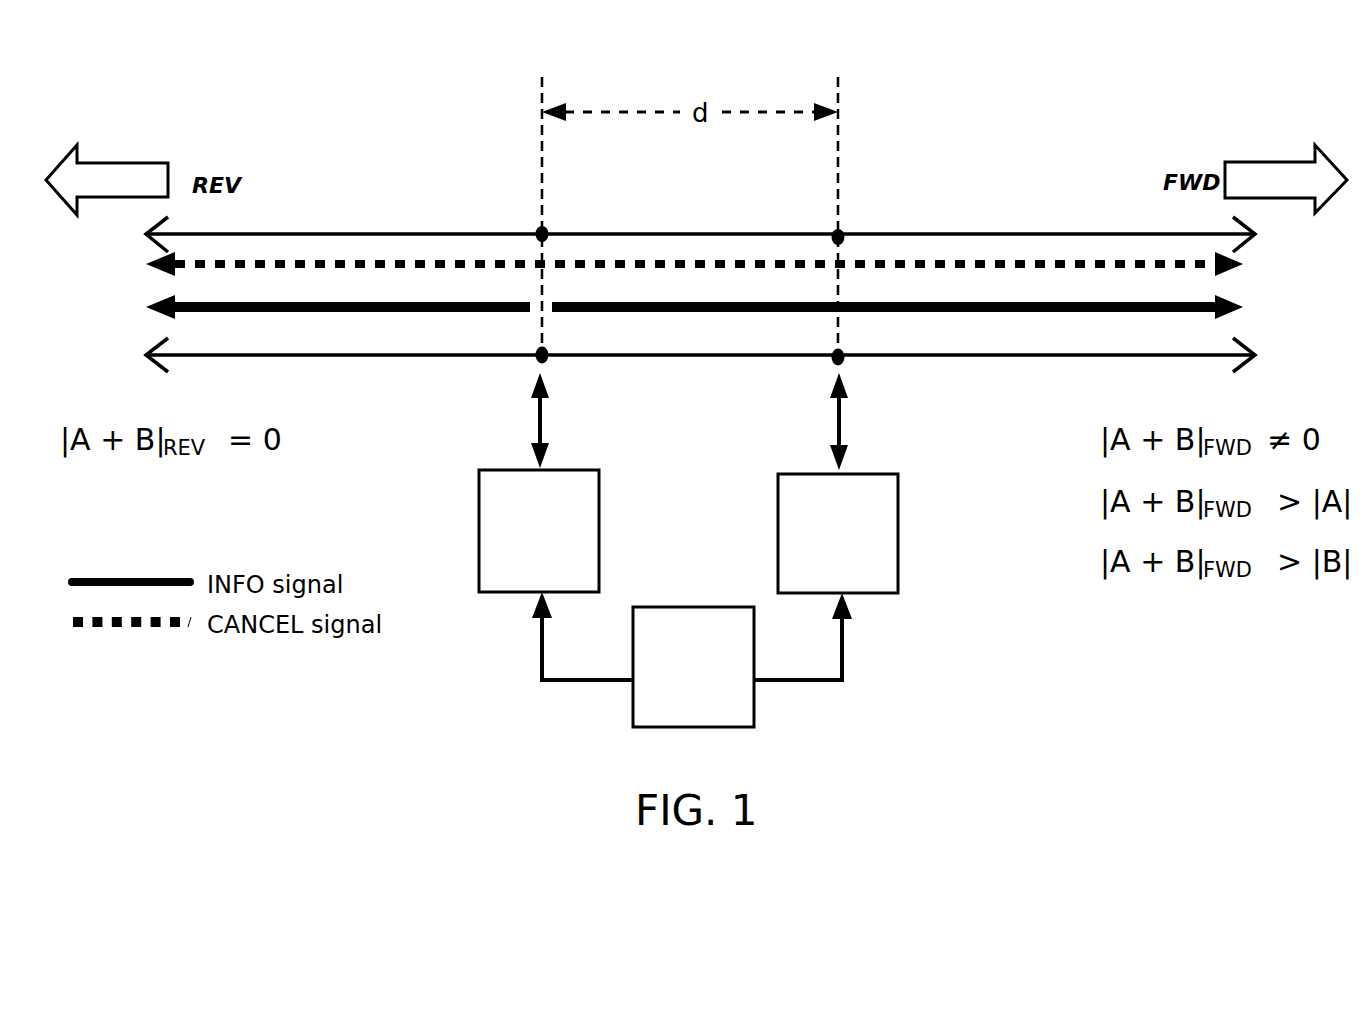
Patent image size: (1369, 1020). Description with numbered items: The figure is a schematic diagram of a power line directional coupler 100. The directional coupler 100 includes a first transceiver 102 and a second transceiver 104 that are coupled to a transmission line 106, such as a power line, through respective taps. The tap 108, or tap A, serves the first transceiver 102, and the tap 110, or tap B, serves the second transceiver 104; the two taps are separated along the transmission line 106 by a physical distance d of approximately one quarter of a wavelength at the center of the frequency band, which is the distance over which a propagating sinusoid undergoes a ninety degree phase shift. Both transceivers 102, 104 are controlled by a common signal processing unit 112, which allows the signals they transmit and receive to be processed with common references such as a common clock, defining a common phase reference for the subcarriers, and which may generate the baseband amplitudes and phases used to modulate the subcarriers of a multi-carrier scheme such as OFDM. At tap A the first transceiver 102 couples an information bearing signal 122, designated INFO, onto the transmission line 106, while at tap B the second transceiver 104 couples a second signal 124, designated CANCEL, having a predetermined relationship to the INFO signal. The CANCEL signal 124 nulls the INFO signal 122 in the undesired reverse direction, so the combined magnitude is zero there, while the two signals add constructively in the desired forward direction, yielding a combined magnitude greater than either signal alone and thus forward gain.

The directional coupler 100 is at (533, 704).
The first transceiver 102 is at (515, 532).
The second transceiver 104 is at (814, 534).
The transmission line 106 is at (397, 233).
The tap 108 is at (540, 420).
The tap 110 is at (842, 430).
The signal processing unit 112 is at (669, 667).
The information bearing signal 122 is at (562, 302).
The second signal 124 is at (800, 263).